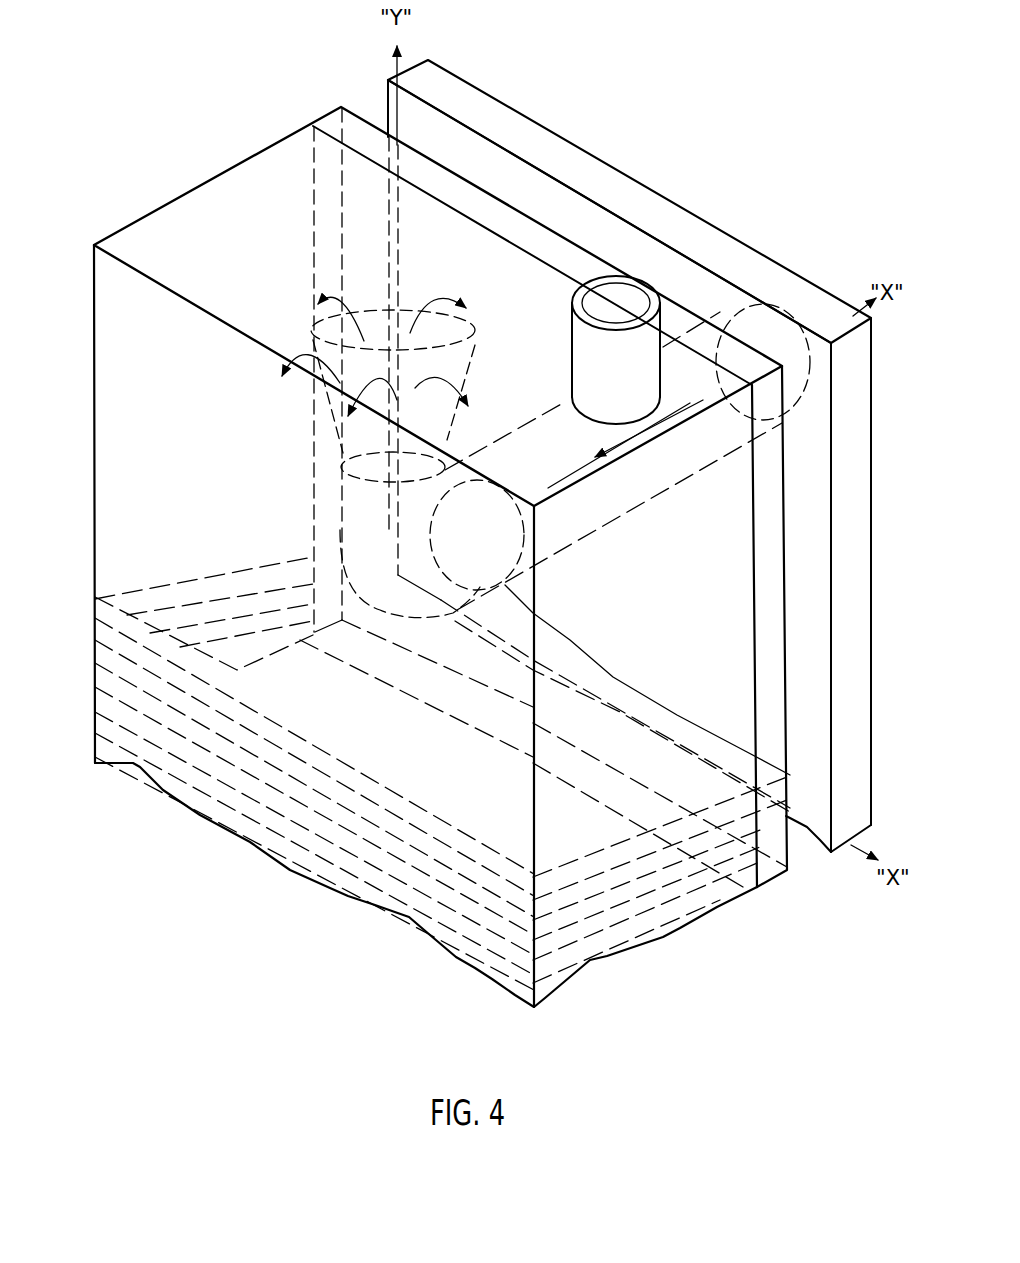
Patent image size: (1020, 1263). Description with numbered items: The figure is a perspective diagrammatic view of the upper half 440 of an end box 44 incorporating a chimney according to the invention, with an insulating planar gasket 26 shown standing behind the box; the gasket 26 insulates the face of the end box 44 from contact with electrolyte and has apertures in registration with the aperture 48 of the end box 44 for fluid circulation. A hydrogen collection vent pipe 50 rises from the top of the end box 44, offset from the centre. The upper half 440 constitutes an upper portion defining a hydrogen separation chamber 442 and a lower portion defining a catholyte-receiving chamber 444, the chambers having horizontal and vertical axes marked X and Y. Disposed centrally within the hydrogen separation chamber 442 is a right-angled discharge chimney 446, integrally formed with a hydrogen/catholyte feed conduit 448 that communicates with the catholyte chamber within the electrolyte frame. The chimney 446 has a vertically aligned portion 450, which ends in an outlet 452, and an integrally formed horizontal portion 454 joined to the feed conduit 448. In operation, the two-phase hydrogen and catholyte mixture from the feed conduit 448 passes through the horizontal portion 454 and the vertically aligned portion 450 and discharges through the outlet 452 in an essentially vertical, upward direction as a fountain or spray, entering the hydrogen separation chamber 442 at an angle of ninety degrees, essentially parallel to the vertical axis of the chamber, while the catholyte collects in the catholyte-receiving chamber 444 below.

The insulating planar gasket 26 is at (683, 216).
The end box 44 is at (93, 451).
The aperture 48 is at (364, 480).
The hydrogen collection vent pipe 50 is at (577, 290).
The upper half of end box 440 is at (86, 309).
The hydrogen separation chamber 442 is at (223, 433).
The catholyte-receiving chamber 444 is at (229, 584).
The discharge chimney 446 is at (335, 510).
The hydrogen/catholyte feed conduit 448 is at (638, 498).
The vertically aligned portion 450 is at (350, 497).
The outlet 452 is at (430, 493).
The horizontal portion 454 is at (427, 621).